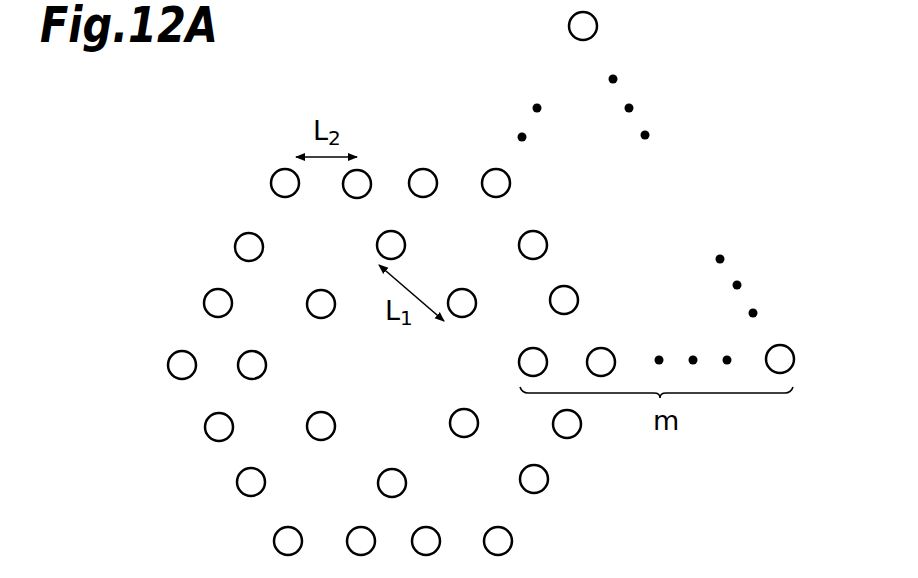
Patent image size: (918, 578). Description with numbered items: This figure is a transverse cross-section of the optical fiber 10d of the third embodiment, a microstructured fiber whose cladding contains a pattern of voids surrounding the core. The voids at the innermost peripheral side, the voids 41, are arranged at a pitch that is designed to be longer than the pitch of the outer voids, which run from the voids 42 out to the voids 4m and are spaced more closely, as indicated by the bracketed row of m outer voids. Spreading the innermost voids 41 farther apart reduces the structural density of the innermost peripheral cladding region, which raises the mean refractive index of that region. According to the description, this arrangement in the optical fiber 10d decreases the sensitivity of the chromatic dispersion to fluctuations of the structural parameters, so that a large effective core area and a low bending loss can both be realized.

The optical fiber 10d is at (718, 131).
The voids at the innermost peripheral side 41 is at (478, 422).
The voids at the outside 42 is at (548, 478).
The voids at the outside 4m is at (779, 345).